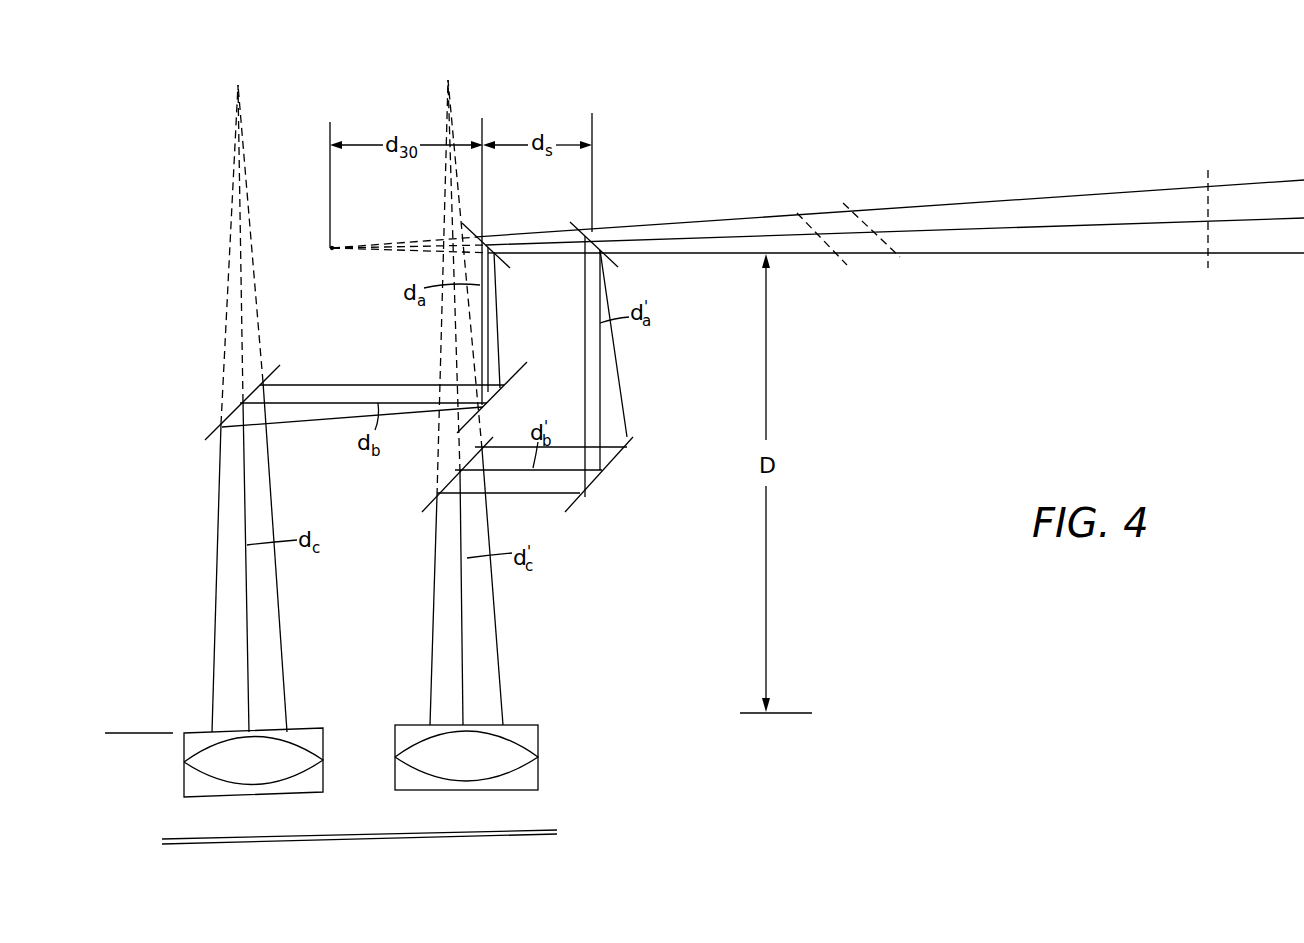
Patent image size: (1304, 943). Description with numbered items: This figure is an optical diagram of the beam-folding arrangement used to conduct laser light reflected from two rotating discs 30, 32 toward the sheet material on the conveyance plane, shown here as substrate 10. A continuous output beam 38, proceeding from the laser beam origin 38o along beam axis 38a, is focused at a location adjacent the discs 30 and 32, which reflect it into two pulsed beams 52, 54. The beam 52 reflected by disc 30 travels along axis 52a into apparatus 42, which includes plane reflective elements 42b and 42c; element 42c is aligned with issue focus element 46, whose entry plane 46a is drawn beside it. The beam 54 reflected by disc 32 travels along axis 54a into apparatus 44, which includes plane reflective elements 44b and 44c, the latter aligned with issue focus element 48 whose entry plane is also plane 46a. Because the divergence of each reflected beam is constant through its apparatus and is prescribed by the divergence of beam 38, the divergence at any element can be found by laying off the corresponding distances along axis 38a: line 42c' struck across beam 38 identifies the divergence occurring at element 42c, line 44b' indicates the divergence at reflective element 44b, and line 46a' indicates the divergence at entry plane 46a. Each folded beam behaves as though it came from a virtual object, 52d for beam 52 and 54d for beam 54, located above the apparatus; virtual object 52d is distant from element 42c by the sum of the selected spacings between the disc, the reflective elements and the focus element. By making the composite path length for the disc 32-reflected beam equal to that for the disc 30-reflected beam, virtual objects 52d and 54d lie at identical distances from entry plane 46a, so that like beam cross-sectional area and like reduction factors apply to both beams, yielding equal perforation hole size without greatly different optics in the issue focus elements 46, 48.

The substrate 10 is at (345, 835).
The disc 30 is at (470, 228).
The disc 32 is at (570, 220).
The continuous output beam 38 is at (1040, 190).
The beam axis 38a is at (658, 238).
The laser beam origin 38o is at (332, 250).
The apparatus 42 is at (320, 467).
The plane reflective element 42b is at (525, 367).
The plane reflective element 42c is at (208, 402).
The line 42c' is at (892, 202).
The apparatus 44 is at (668, 503).
The plane reflective element 44b is at (646, 467).
The line 44b' is at (806, 206).
The plane reflective element 44c is at (442, 483).
The issue focus element 46 is at (310, 730).
The entry plane 46a is at (138, 703).
The line 46a' is at (1248, 188).
The issue focus element 48 is at (525, 725).
The beam 52 is at (203, 554).
The axis 52a is at (490, 300).
The virtual object 52d is at (238, 85).
The beam 54 is at (417, 587).
The axis 54a is at (602, 357).
The virtual object 54d is at (448, 80).